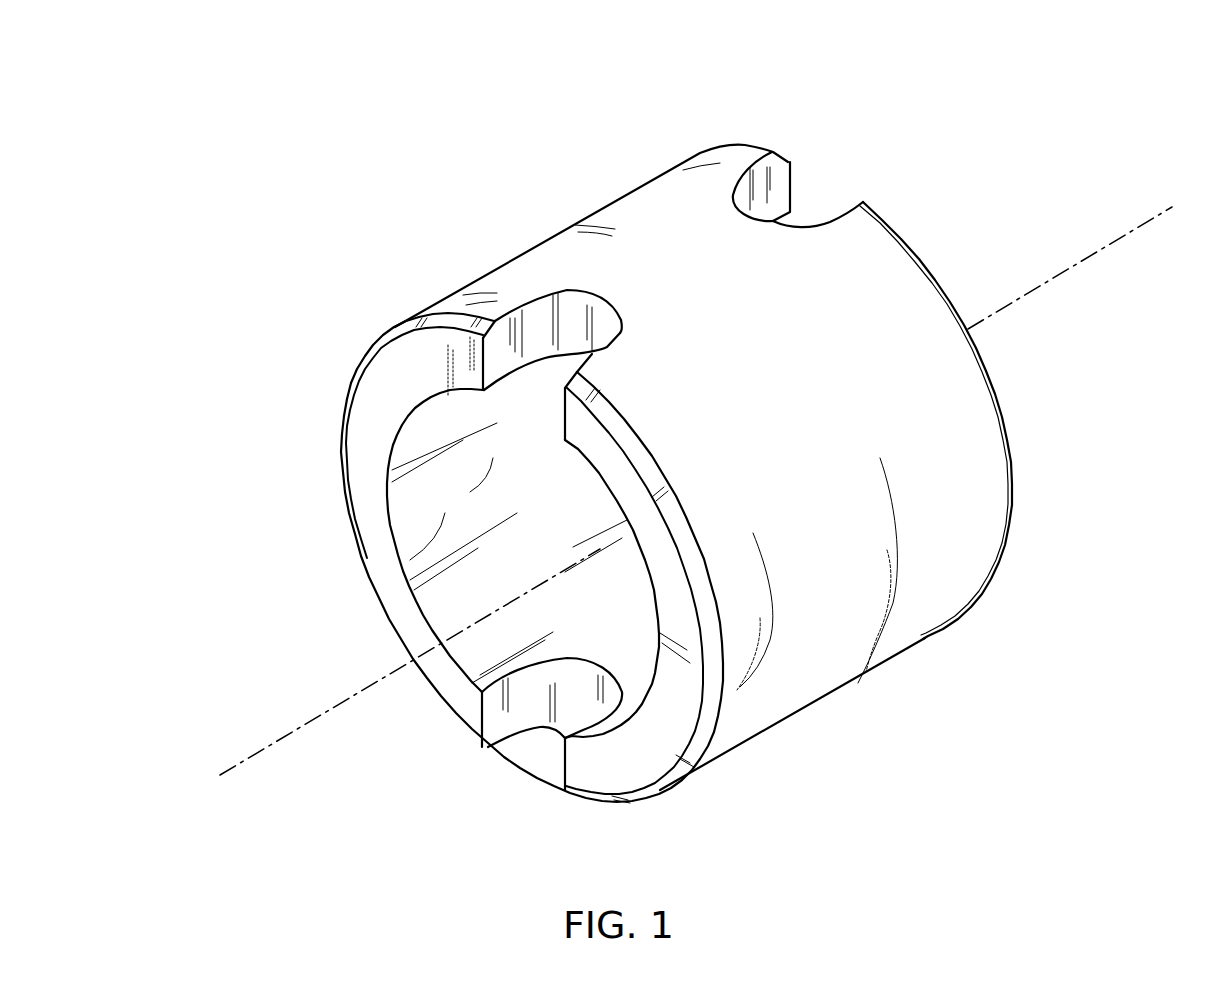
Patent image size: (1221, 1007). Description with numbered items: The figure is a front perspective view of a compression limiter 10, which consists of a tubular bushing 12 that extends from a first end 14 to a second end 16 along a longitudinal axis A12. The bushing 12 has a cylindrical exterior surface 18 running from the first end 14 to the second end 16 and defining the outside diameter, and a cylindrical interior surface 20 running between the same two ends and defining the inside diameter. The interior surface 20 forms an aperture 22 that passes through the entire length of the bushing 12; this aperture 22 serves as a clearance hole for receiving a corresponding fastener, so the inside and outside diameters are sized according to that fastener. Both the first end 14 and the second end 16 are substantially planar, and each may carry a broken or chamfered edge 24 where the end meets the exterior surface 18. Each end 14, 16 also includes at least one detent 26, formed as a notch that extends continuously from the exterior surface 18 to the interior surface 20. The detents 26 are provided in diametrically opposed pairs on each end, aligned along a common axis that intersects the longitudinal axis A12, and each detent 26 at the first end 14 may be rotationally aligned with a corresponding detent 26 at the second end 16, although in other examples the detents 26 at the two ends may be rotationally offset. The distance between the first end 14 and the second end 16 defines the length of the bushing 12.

The compression limiter 10 is at (372, 135).
The tubular bushing 12 is at (598, 207).
The first end 14 is at (466, 694).
The second end 16 is at (948, 288).
The cylindrical exterior surface 18 is at (803, 690).
The cylindrical interior surface 20 is at (447, 517).
The aperture 22 is at (390, 502).
The chamfered edge 24 is at (375, 352).
The detent 26 is at (538, 337).
The longitudinal axis A12 is at (257, 755).